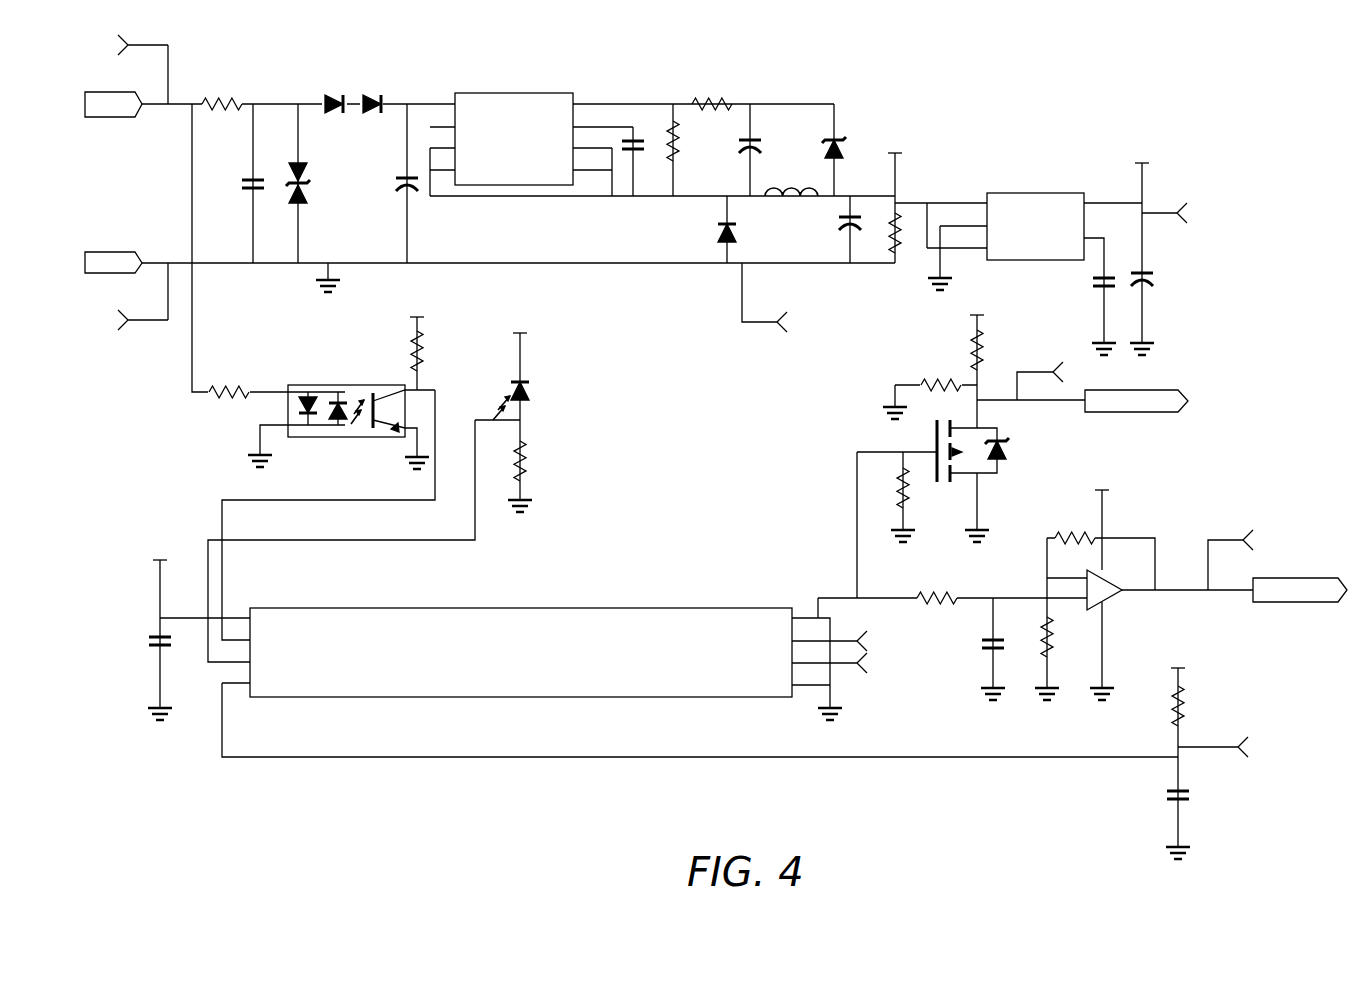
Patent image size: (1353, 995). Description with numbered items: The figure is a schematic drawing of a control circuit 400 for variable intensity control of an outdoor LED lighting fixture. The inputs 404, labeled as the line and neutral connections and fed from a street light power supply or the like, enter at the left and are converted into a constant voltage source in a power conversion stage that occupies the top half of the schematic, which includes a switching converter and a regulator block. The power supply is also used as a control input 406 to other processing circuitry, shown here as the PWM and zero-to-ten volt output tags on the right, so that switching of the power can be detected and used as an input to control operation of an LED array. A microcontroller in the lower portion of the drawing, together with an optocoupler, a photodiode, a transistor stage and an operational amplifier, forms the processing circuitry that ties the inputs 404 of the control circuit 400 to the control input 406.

The control circuit 400 is at (322, 776).
The inputs 404 is at (112, 118).
The control input 406 is at (1133, 415).